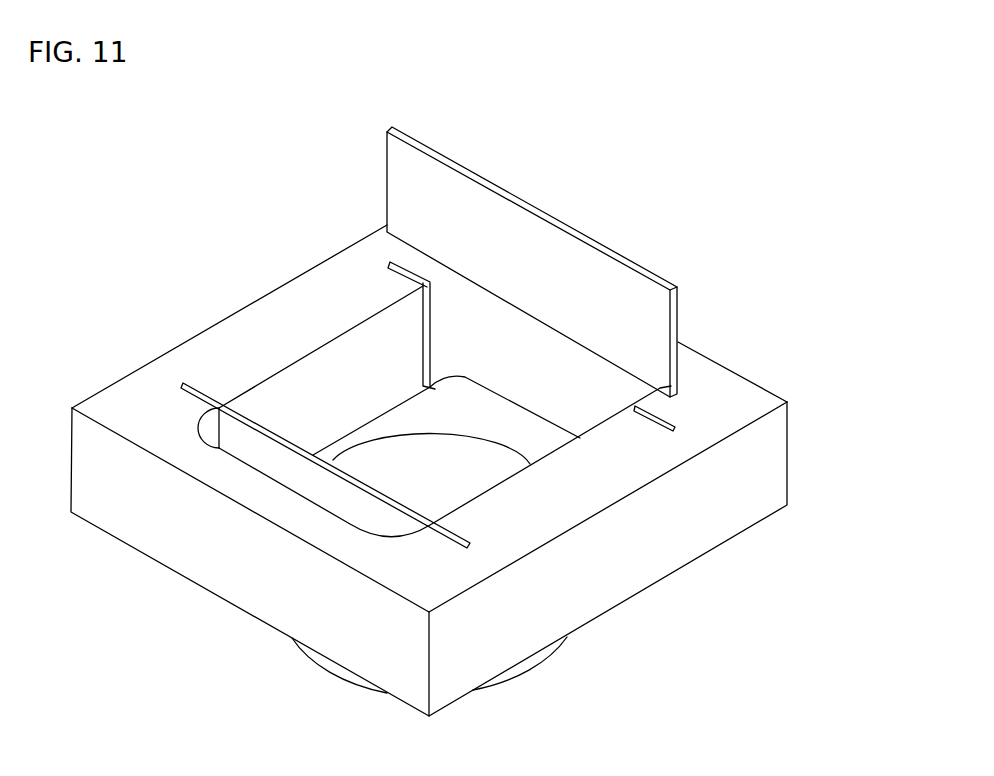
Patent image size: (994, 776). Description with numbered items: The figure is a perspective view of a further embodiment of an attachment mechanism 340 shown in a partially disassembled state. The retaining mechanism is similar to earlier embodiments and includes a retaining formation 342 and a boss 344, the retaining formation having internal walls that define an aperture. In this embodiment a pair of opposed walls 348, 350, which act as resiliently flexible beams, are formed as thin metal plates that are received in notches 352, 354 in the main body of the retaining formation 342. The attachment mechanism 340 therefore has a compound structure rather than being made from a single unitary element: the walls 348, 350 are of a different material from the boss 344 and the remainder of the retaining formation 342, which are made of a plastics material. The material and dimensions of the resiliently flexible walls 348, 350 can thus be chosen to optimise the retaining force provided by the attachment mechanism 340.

The attachment mechanism 340 is at (672, 136).
The retaining formation 342 is at (730, 364).
The boss 344 is at (393, 465).
The wall 348 is at (248, 408).
The wall 350 is at (467, 167).
The notch 352 is at (392, 260).
The notch 354 is at (658, 430).